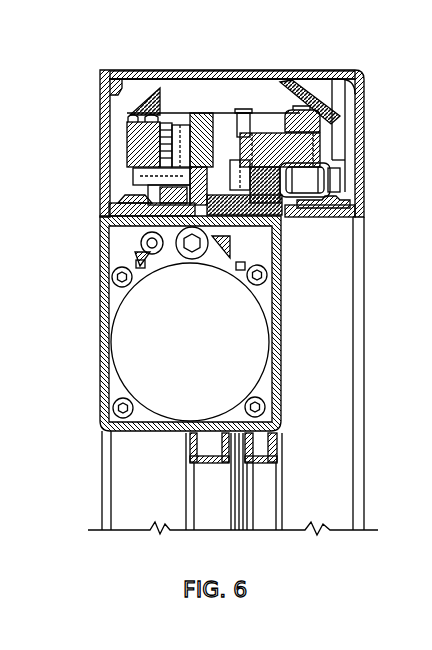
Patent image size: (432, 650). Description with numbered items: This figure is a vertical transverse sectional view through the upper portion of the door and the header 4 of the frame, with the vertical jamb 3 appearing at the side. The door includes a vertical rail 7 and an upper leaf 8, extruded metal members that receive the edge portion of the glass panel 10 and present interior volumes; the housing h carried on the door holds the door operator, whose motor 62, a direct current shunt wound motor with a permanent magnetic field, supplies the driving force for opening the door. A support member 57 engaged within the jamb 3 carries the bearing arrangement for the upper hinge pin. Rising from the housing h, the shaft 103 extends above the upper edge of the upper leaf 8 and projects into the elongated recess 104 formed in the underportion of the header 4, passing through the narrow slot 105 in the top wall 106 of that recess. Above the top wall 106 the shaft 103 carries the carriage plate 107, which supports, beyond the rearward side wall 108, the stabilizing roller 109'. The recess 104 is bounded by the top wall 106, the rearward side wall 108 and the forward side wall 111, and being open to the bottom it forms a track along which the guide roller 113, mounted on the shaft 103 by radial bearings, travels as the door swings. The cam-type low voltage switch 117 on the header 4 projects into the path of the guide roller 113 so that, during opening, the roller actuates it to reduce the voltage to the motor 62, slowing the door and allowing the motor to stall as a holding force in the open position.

The vertical jamb 3 is at (365, 263).
The header 4 is at (362, 112).
The vertical rail 7 is at (190, 532).
The upper leaf 8 is at (100, 256).
The glass panel 10 is at (232, 532).
The support member 57 is at (215, 82).
The motor 62 is at (113, 335).
The shaft 103 is at (243, 147).
The elongated recess 104 is at (152, 160).
The narrow slot 105 is at (244, 120).
The top wall 106 is at (305, 148).
The carriage plate 107 is at (300, 166).
The rearward side wall 108 is at (305, 206).
The stabilizing roller 109' is at (373, 180).
The forward side wall 111 is at (165, 201).
The guide roller 113 is at (276, 213).
The cam-type low voltage switch 117 is at (170, 180).
The housing h is at (101, 303).